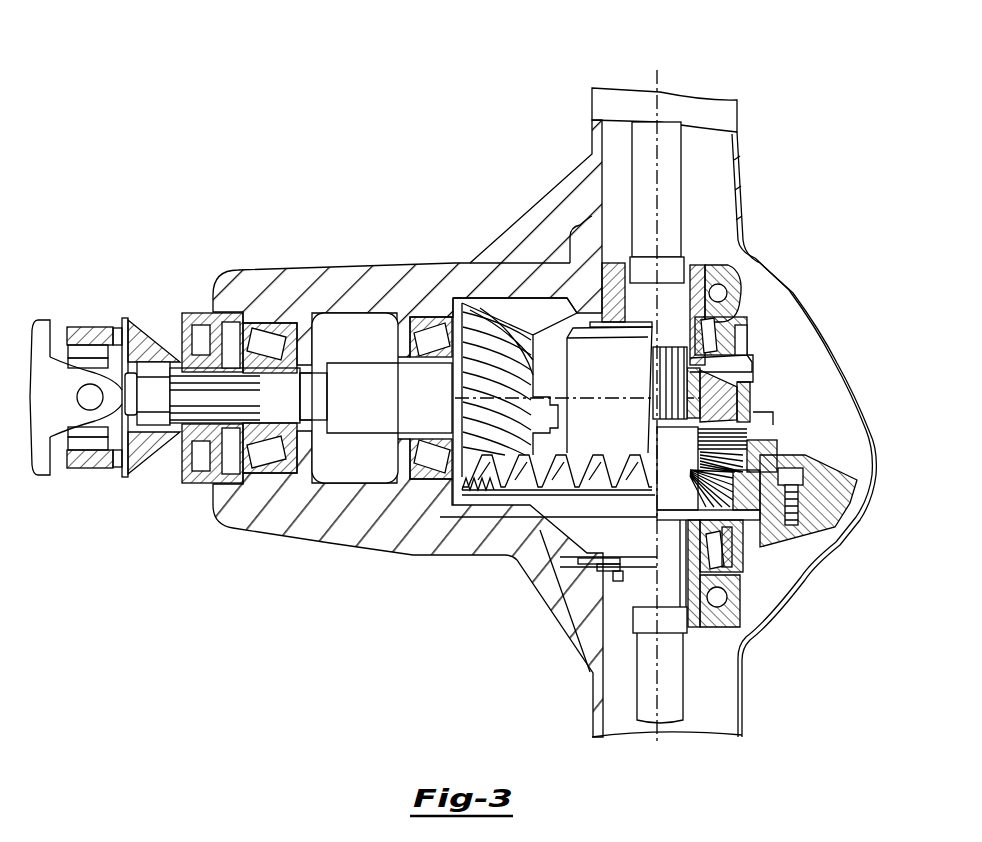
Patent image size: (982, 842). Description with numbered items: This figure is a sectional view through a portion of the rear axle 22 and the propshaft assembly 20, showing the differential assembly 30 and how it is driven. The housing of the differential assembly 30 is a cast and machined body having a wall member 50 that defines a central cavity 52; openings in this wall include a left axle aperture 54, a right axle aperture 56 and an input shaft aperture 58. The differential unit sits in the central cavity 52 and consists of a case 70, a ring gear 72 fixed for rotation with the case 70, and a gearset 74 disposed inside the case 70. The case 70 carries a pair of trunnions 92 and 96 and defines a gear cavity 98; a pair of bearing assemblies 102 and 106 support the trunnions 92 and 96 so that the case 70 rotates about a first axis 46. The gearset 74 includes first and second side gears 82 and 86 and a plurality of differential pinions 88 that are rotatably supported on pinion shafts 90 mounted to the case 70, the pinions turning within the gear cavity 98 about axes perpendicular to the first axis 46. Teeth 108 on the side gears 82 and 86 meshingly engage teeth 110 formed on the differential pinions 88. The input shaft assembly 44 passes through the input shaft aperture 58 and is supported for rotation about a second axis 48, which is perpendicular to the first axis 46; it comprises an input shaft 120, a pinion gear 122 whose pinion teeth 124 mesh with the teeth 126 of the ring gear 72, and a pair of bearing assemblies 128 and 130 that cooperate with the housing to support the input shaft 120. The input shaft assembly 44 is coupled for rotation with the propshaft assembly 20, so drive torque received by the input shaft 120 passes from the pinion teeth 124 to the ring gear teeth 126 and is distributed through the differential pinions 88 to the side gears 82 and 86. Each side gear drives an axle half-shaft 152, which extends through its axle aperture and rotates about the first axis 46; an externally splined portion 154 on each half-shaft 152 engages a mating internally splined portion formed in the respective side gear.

The propshaft assembly 20 is at (58, 346).
The rear axle 22 is at (363, 147).
The differential assembly 30 is at (747, 412).
The input shaft assembly 44 is at (318, 418).
The first axis 46 is at (659, 88).
The second axis 48 is at (337, 405).
The wall member 50 is at (473, 272).
The central cavity 52 is at (833, 437).
The left axle aperture 54 is at (715, 653).
The right axle aperture 56 is at (720, 200).
The input shaft aperture 58 is at (345, 300).
The case 70 is at (640, 345).
The ring gear 72 is at (548, 507).
The gearset 74 is at (796, 413).
The first side gear 82 is at (677, 515).
The second side gear 86 is at (707, 395).
The differential pinions 88 is at (735, 415).
The pinion shafts 90 is at (767, 437).
The trunnion 92 is at (718, 557).
The trunnion 96 is at (742, 338).
The gear cavity 98 is at (665, 438).
The bearing assembly 102 is at (722, 565).
The bearing assembly 106 is at (730, 327).
The teeth 108 is at (680, 490).
The teeth 110 is at (758, 530).
The input shaft 120 is at (423, 378).
The pinion gear 122 is at (515, 401).
The pinion teeth 124 is at (522, 357).
The teeth 126 is at (577, 450).
The bearing assembly 128 is at (427, 346).
The bearing assembly 130 is at (291, 300).
The axle half-shaft 152 is at (677, 153).
The externally splined portion 154 is at (665, 362).